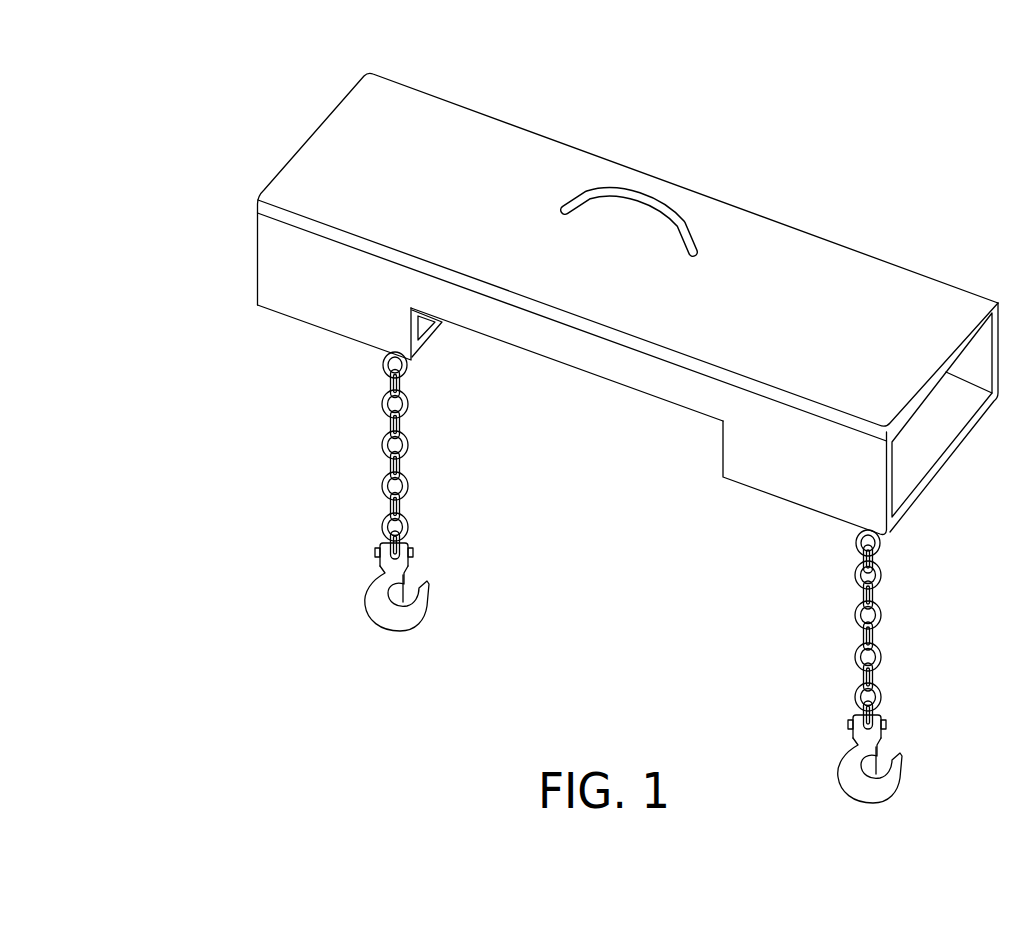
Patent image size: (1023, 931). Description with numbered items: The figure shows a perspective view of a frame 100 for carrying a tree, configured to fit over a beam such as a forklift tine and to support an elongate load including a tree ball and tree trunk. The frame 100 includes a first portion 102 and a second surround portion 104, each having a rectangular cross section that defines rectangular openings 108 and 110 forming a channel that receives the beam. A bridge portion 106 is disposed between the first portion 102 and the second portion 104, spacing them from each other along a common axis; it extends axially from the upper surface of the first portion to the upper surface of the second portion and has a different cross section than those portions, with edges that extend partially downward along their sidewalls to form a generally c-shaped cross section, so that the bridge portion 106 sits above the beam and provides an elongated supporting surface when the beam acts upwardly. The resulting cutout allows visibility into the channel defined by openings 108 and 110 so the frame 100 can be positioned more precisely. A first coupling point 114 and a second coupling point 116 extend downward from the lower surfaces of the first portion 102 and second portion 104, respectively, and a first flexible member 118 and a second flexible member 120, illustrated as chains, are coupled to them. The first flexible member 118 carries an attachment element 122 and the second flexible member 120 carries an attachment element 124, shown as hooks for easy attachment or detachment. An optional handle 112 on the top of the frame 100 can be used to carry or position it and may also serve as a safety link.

The frame 100 is at (207, 58).
The first portion 102 is at (348, 290).
The second surround portion 104 is at (818, 470).
The bridge portion 106 is at (597, 360).
The rectangular opening 108 is at (963, 426).
The rectangular opening 110 is at (443, 323).
The handle 112 is at (612, 190).
The first coupling point 114 is at (384, 362).
The second coupling point 116 is at (857, 529).
The first flexible member 118 is at (382, 444).
The second flexible member 120 is at (858, 653).
The attachment element 122 is at (399, 631).
The attachment element 124 is at (872, 803).